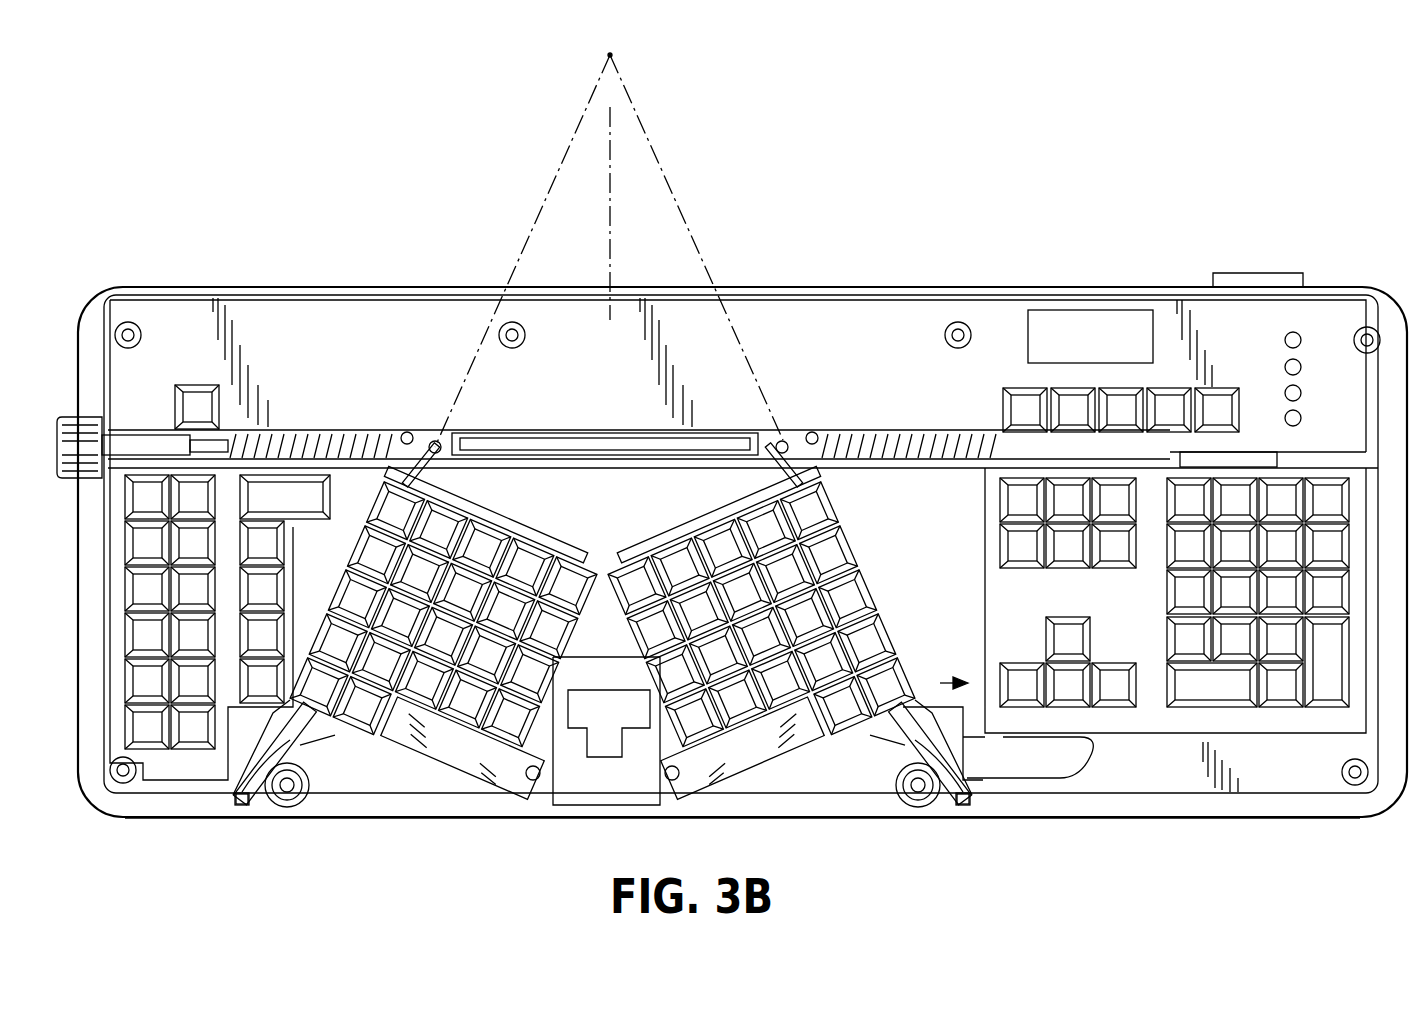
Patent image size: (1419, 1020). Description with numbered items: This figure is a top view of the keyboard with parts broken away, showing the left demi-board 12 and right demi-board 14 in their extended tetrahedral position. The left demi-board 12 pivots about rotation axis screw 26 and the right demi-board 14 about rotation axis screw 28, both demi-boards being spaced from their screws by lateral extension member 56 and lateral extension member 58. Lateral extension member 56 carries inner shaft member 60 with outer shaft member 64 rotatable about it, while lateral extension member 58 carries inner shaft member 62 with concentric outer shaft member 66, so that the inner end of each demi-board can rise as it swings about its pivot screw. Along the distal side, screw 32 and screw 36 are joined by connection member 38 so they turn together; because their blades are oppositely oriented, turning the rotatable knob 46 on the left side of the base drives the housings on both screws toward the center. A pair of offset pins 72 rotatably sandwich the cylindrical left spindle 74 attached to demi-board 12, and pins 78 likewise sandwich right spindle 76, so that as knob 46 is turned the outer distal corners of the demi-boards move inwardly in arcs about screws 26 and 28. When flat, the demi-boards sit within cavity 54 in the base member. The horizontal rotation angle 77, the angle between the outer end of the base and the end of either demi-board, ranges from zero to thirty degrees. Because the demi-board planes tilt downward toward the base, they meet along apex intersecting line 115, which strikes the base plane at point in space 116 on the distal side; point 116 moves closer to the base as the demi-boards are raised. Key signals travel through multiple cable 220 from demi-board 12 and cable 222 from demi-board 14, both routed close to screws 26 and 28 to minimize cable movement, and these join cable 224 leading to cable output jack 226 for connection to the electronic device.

The left demi-board 12 is at (380, 755).
The right demi-board 14 is at (822, 755).
The rotation axis screw 26 is at (292, 796).
The rotation axis screw 28 is at (912, 796).
The screw 32 is at (303, 440).
The screw 36 is at (905, 440).
The connection member 38 is at (594, 438).
The rotatable knob 46 is at (57, 430).
The cavity 54 is at (624, 511).
The lateral extension member 56 is at (240, 778).
The lateral extension member 58 is at (972, 778).
The inner shaft member 60 is at (284, 750).
The inner shaft member 62 is at (922, 760).
The outer shaft member 64 is at (242, 798).
The outer shaft member 66 is at (966, 798).
The pins 72 is at (441, 443).
The left spindle 74 is at (428, 486).
The right spindle 76 is at (790, 480).
The horizontal rotation angle 77 is at (938, 683).
The pins 78 is at (813, 432).
The apex intersecting line 115 is at (632, 253).
The point in space 116 is at (612, 54).
The multiple cable 220 is at (338, 760).
The cable 222 is at (1080, 762).
The cable 224 is at (1262, 457).
The cable output jack 226 is at (1270, 285).